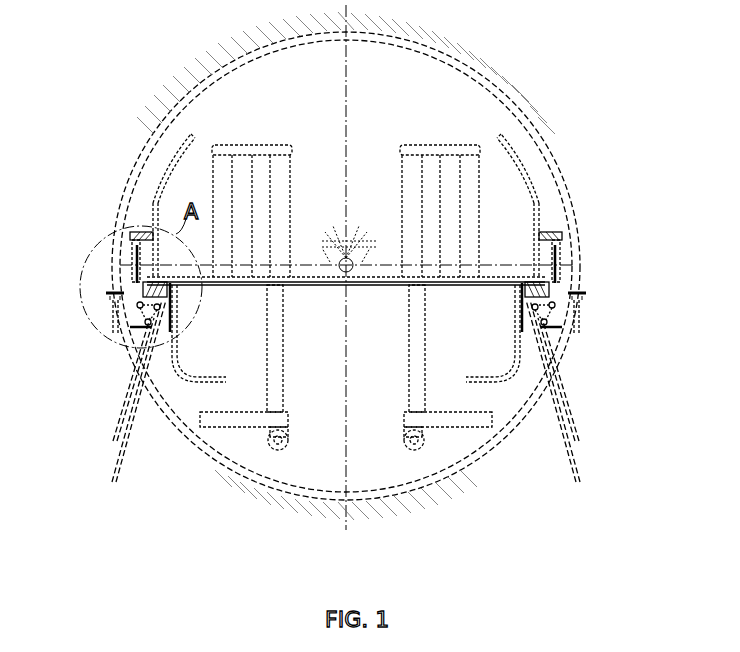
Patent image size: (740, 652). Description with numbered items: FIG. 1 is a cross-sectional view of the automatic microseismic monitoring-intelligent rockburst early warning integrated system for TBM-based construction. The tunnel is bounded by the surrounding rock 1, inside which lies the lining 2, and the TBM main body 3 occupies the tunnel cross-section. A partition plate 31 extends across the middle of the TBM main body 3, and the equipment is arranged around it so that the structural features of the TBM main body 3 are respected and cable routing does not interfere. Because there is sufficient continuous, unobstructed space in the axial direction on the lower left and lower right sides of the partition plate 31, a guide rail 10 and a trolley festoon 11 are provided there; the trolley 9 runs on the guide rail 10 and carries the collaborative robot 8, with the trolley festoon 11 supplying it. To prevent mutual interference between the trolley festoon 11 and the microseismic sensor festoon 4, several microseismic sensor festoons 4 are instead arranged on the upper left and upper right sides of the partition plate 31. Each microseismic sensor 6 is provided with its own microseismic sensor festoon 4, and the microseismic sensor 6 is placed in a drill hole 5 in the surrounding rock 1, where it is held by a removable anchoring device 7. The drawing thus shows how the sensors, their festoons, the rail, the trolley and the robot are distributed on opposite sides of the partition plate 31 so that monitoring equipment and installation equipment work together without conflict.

The surrounding rock 1 is at (158, 107).
The lining 2 is at (145, 143).
The TBM main body 3 is at (150, 208).
The partition plate 31 is at (423, 277).
The microseismic sensor festoon 4 is at (128, 260).
The drill hole 5 is at (123, 337).
The microseismic sensor 6 is at (112, 297).
The removable anchoring device 7 is at (150, 310).
The collaborative robot 8 is at (113, 441).
The trolley 9 is at (112, 482).
The guide rail 10 is at (168, 283).
The trolley festoon 11 is at (168, 312).